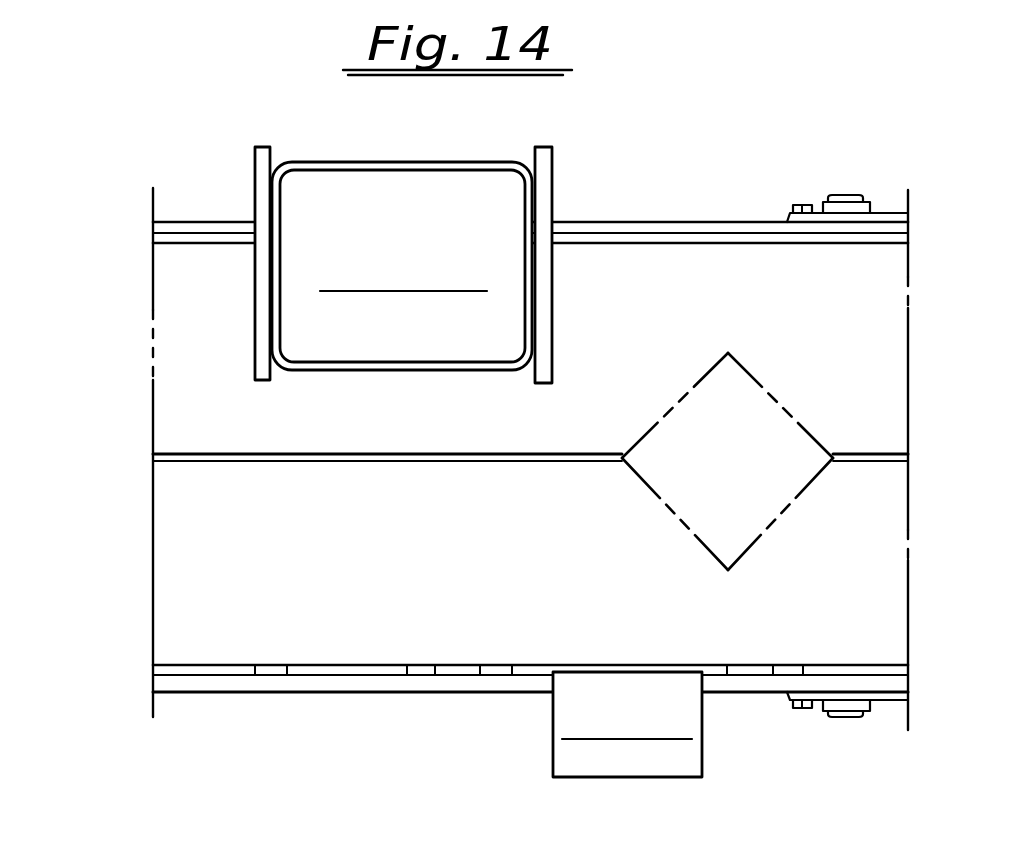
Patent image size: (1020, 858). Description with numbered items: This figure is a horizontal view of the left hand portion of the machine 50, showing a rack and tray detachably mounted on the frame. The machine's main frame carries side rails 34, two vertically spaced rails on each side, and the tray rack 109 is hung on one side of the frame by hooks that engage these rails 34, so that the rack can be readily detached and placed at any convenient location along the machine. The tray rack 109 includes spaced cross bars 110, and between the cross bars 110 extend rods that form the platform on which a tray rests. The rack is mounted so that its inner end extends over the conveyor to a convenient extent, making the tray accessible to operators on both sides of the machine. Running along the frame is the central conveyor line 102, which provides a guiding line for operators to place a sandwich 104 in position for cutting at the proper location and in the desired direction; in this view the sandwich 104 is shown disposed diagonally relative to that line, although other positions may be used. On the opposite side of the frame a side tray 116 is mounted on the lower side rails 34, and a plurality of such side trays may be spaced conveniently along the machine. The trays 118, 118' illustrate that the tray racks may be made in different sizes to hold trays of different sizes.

The conveyor assembly 50 is at (153, 384).
The side rails 34 is at (706, 222).
The center rail 102 is at (418, 465).
The transfer station 104 is at (773, 396).
The tray rack 109 is at (553, 181).
The cross bars 110 is at (254, 182).
The side tray 116 is at (618, 683).
The tray 118 is at (375, 230).
The tray 118' is at (565, 714).